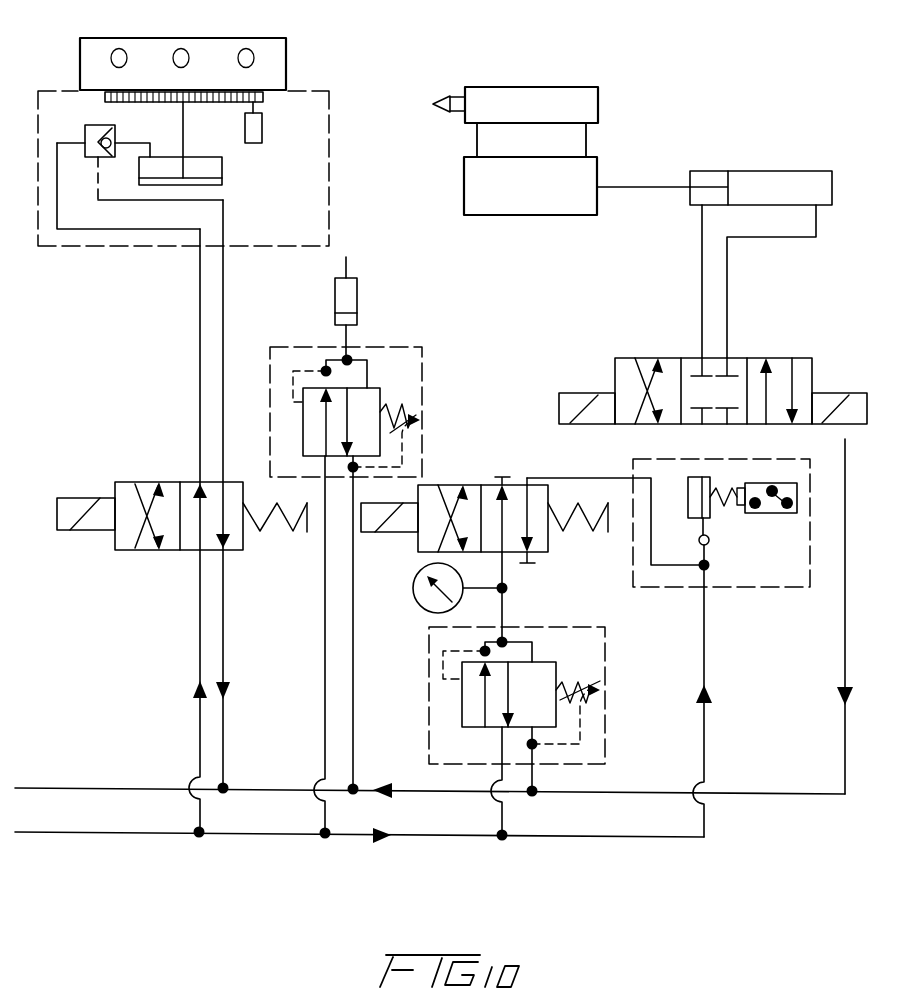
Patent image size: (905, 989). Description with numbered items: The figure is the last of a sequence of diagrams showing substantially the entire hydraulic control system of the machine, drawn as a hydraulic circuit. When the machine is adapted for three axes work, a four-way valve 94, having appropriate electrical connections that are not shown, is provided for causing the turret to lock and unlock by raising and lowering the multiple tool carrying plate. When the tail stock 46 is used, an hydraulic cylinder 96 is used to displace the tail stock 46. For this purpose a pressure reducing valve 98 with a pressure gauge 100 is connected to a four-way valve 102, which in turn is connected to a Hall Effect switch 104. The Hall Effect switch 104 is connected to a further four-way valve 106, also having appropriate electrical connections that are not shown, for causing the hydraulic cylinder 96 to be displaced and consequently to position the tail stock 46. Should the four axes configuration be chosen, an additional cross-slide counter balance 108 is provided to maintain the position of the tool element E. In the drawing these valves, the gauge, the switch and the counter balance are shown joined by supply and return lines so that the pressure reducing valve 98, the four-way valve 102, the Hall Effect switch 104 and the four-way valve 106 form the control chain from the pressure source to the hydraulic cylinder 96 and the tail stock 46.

The tool element E is at (227, 31).
The tail stock 46 is at (549, 79).
The hydraulic cylinder 96 is at (781, 175).
The four-way valve 106 is at (831, 328).
The Hall Effect switch 104 is at (812, 513).
The four-way valve 102 is at (472, 480).
The pressure gauge 100 is at (418, 613).
The pressure reducing valve 98 is at (610, 706).
The cross-slide counter balance 108 is at (430, 359).
The four-way valve 94 is at (172, 556).